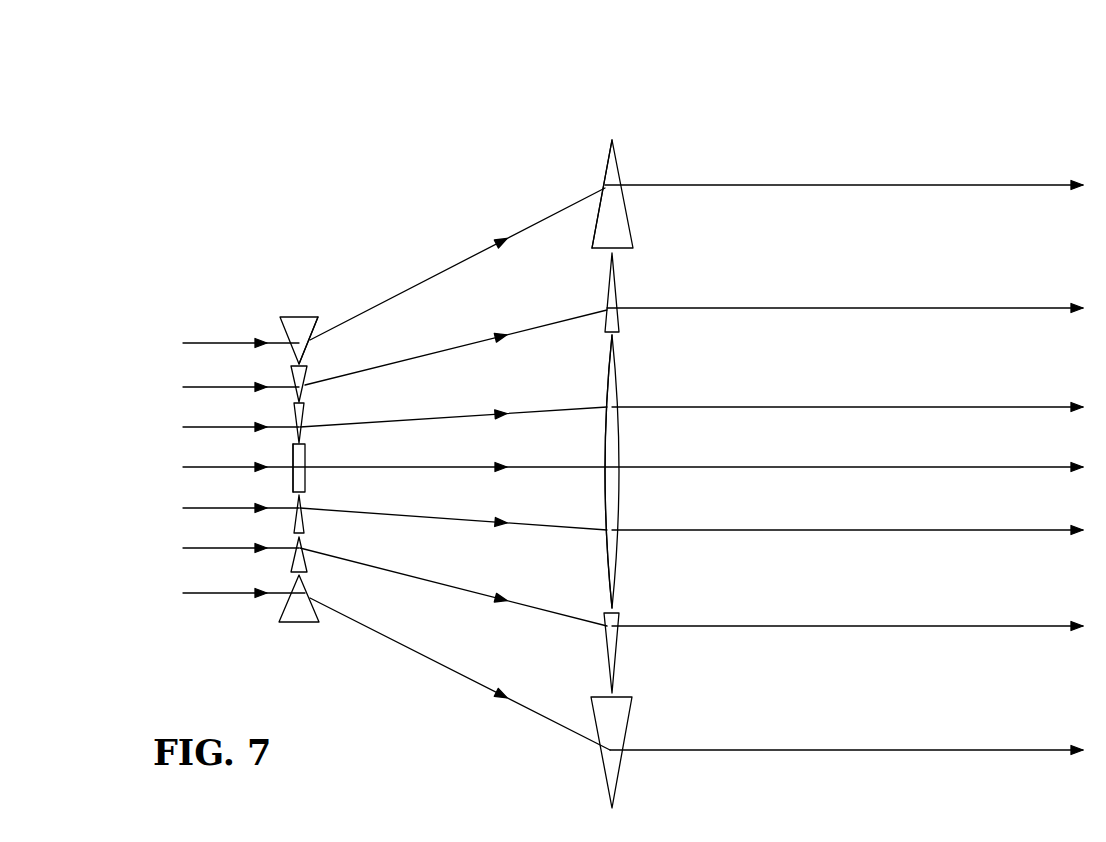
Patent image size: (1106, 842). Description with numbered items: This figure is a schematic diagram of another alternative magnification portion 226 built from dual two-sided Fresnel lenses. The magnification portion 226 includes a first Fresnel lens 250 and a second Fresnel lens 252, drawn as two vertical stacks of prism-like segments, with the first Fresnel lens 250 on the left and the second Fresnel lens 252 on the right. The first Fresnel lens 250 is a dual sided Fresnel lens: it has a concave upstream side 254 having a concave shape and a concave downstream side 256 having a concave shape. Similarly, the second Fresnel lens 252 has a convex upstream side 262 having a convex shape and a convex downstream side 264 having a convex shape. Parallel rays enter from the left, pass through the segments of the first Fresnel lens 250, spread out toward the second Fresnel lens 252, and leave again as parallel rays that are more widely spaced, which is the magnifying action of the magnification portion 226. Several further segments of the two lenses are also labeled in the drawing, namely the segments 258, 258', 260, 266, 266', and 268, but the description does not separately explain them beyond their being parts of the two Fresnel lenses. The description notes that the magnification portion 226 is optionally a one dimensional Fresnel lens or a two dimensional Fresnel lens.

The magnification portion 226 is at (410, 77).
The first Fresnel lens 250 is at (294, 397).
The second Fresnel lens 252 is at (613, 447).
The concave upstream side 254 is at (293, 330).
The concave downstream side 256 is at (317, 320).
The central flat plate 258 is at (344, 468).
The central flat plate input face 258' is at (243, 472).
The second prism 260 is at (305, 378).
The convex upstream side 262 is at (607, 167).
The convex downstream side 264 is at (618, 173).
The central lens element 266 is at (659, 471).
The central lens element input face 266' is at (560, 471).
The inner prism 268 is at (617, 290).